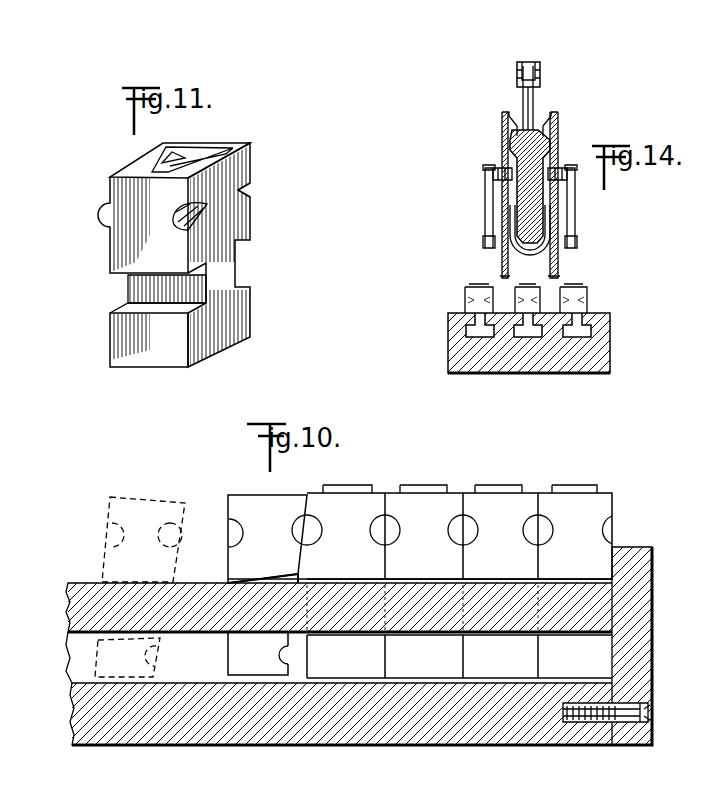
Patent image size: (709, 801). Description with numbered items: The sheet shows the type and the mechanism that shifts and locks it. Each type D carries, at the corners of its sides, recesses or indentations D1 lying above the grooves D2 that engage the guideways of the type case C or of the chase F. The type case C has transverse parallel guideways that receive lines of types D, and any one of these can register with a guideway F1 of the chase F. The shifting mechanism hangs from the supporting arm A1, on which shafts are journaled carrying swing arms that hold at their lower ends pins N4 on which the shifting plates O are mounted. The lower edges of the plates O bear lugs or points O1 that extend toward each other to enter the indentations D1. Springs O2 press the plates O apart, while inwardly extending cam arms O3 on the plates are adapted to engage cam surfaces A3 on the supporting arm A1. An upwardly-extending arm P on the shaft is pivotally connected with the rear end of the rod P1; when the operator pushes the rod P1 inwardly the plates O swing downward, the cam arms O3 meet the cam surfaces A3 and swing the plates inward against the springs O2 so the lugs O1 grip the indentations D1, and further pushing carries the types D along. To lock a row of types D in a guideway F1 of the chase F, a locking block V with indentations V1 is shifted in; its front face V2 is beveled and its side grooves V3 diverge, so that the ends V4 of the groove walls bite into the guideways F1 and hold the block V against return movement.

In FIG. 11, the type D is at (165, 255).
In FIG. 14, the type D is at (590, 303).
In FIG. 10, the type D is at (468, 500).
In FIG. 11, the recess or indentation D1 is at (240, 187).
In FIG. 10, the recess or indentation D1 is at (325, 522).
In FIG. 11, the groove D2 is at (135, 293).
In FIG. 10, the groove D2 is at (430, 640).
In FIG. 10, the locking block V is at (292, 496).
In FIG. 10, the indentation V1 is at (226, 532).
In FIG. 10, the front face V2 is at (290, 657).
In FIG. 10, the side groove V3 is at (265, 577).
In FIG. 10, the end of groove wall V4 is at (227, 582).
In FIG. 10, the chase F is at (357, 740).
In FIG. 10, the guideway F1 is at (62, 640).
In FIG. 14, the upwardly-extending arm P is at (536, 102).
In FIG. 14, the rod P1 is at (533, 66).
In FIG. 14, the shifting plate O is at (560, 220).
In FIG. 14, the lug or point O1 is at (508, 276).
In FIG. 14, the spring O2 is at (508, 250).
In FIG. 14, the cam arm O3 is at (502, 113).
In FIG. 14, the supporting arm A1 is at (518, 203).
In FIG. 14, the cam surface A3 is at (512, 140).
In FIG. 14, the pin N4 is at (484, 226).
In FIG. 14, the type case or magazine C is at (534, 375).